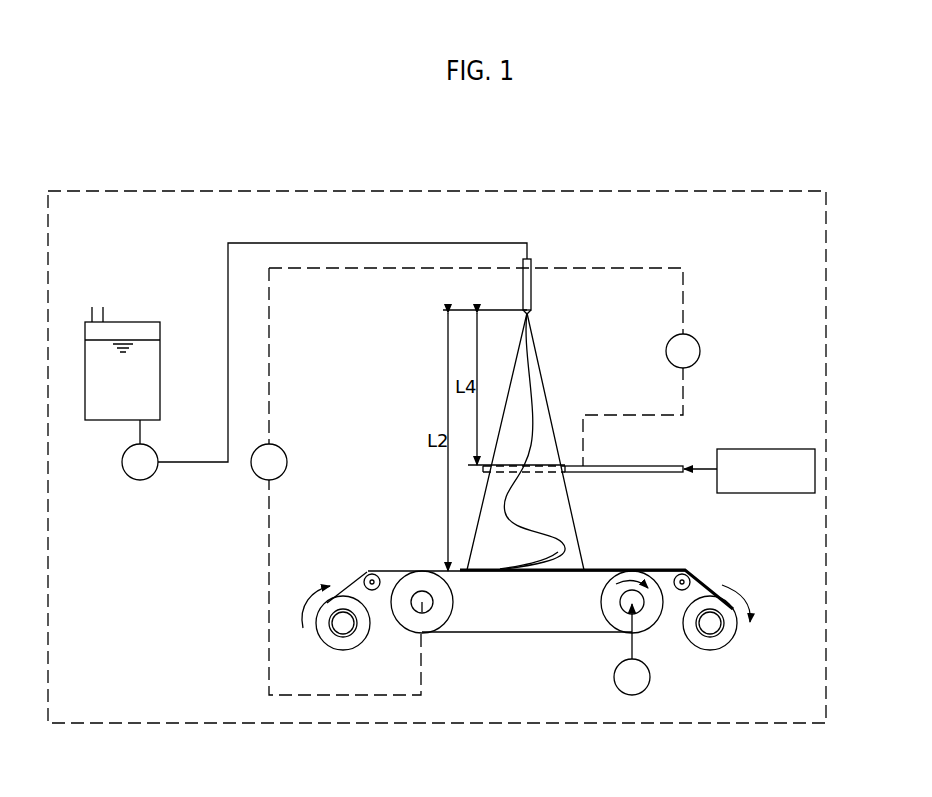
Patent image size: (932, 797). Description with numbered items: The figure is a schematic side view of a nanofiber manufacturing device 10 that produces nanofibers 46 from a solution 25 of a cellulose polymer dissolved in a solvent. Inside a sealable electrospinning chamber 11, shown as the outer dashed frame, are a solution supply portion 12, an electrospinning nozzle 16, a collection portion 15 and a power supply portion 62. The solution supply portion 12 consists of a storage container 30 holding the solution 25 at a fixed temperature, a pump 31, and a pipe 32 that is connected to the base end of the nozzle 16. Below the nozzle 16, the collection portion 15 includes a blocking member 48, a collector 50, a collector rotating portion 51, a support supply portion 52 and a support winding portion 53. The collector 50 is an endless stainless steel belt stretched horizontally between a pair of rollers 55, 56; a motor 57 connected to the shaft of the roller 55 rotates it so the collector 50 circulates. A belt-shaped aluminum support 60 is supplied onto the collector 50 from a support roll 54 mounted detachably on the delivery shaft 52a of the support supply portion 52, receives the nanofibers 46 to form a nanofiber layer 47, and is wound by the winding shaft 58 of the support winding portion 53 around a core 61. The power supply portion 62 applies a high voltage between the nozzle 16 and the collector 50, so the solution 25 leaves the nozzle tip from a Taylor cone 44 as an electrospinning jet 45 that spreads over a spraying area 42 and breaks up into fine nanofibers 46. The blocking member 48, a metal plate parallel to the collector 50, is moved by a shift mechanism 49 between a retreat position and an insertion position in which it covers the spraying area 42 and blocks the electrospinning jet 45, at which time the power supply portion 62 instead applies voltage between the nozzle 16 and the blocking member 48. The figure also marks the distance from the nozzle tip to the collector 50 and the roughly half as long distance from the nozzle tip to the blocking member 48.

The nanofiber manufacturing device 10 is at (662, 175).
The electrospinning chamber 11 is at (380, 192).
The solution supply portion 12 is at (111, 316).
The collection portion 15 is at (431, 505).
The electrospinning nozzle 16 is at (532, 260).
The solution 25 is at (143, 348).
The storage container 30 is at (160, 386).
The pump 31 is at (143, 481).
The pipe 32 is at (380, 243).
The spraying area 42 is at (548, 407).
The Taylor cone 44 is at (523, 311).
The electrospinning jet 45 is at (530, 382).
The nanofibers 46 is at (550, 556).
The nanofiber layer 47 is at (670, 571).
The blocking member 48 is at (600, 466).
The shift mechanism 49 is at (745, 449).
The collector 50 is at (550, 652).
The collector rotating portion 51 is at (607, 647).
The support supply portion 52 is at (342, 566).
The delivery shaft 52a is at (342, 637).
The support winding portion 53 is at (721, 659).
The support roll 54 is at (352, 630).
The roller 55 is at (602, 606).
The roller 56 is at (446, 606).
The motor 57 is at (650, 678).
The winding shaft 58 is at (716, 630).
The support 60 is at (390, 571).
The core 61 is at (698, 630).
The power supply portion 62 is at (700, 343).